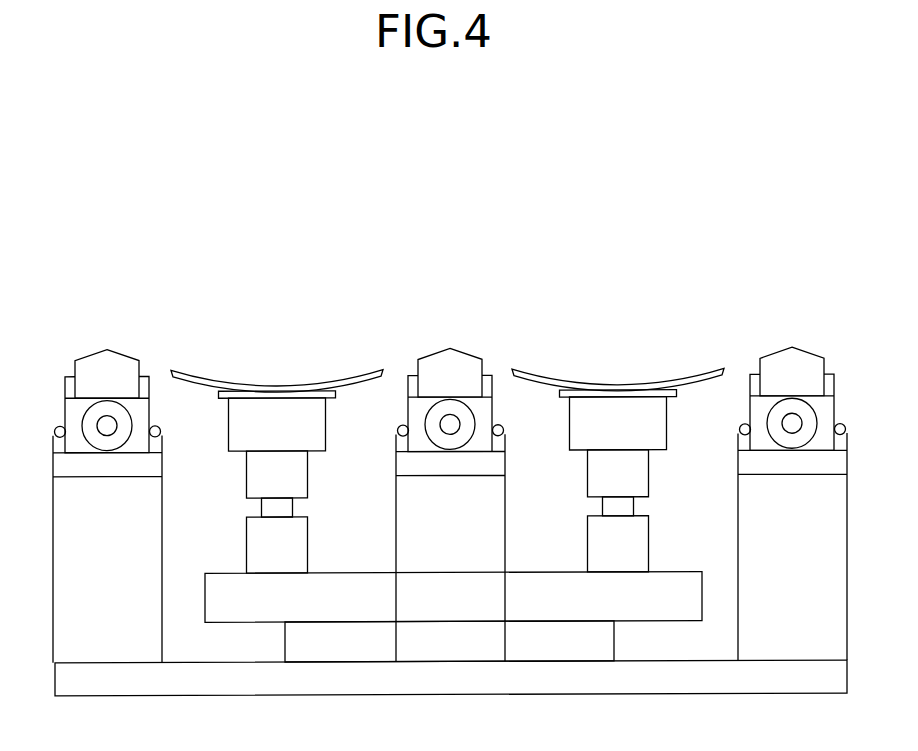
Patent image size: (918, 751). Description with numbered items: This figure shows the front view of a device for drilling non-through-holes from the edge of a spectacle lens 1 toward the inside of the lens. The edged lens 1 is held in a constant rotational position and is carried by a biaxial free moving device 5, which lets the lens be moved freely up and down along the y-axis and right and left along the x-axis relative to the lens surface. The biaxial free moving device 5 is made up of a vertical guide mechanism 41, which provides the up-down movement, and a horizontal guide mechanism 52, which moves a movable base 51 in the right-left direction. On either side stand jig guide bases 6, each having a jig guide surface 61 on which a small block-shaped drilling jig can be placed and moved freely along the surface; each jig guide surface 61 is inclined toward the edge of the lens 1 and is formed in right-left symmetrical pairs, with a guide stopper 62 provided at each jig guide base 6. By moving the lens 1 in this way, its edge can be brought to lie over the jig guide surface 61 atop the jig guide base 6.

The spectacle lens 1 is at (322, 384).
The biaxial free moving device 5 is at (453, 575).
The movable base 51 is at (356, 574).
The horizontal guide mechanism 52 is at (285, 635).
The vertical guide mechanism 41 is at (242, 519).
The jig guide base 6 is at (457, 361).
The jig guide surface 61 is at (148, 377).
The guide stopper 62 is at (78, 360).